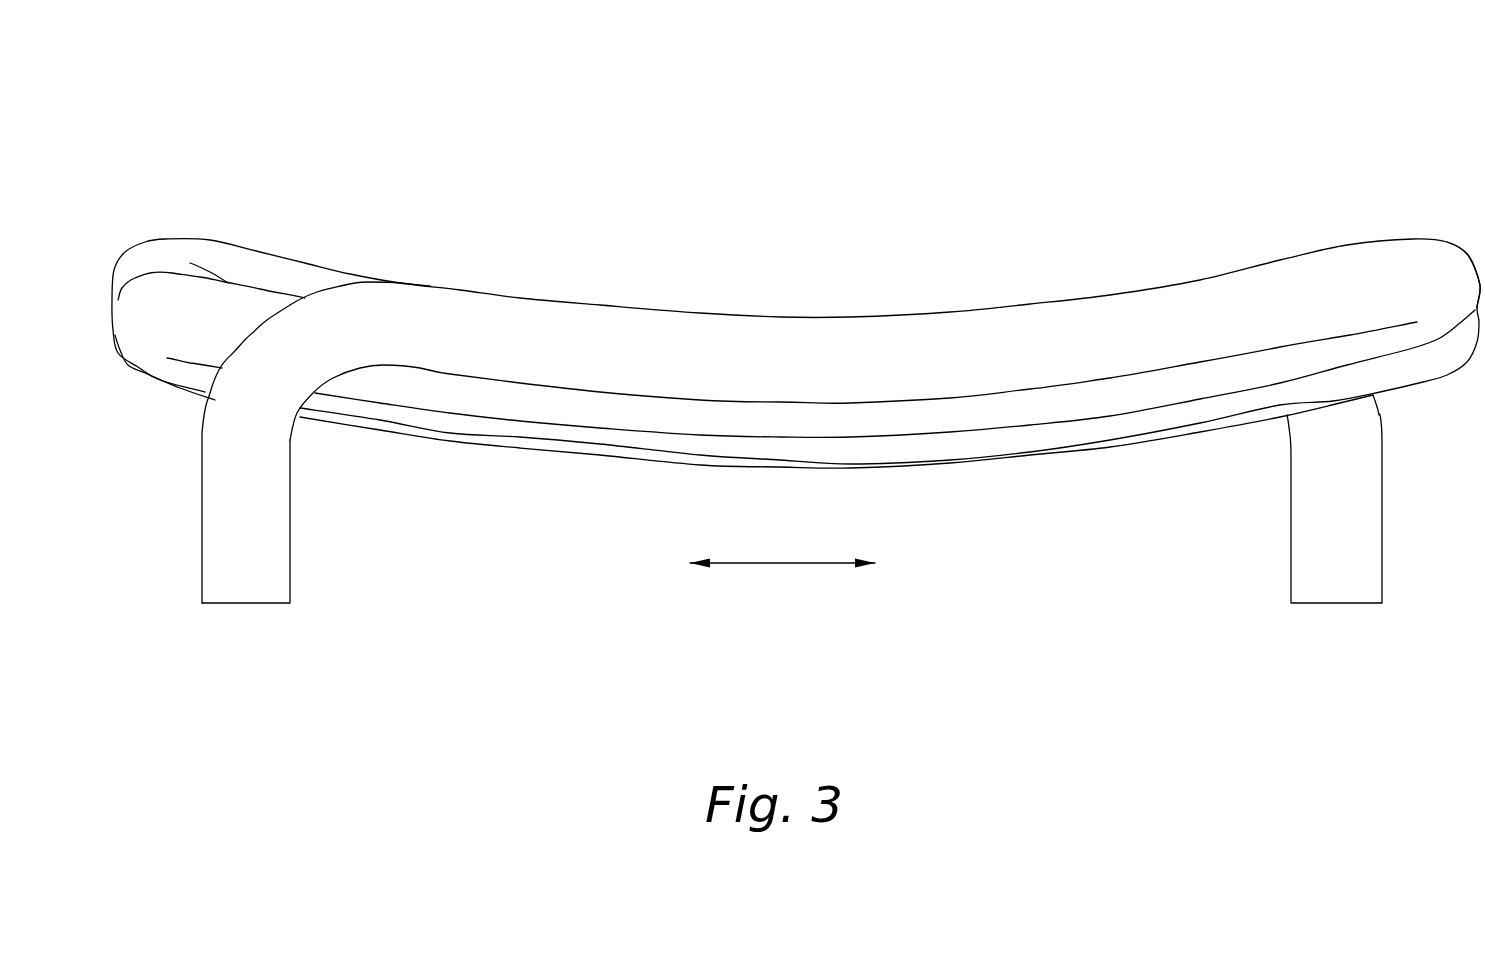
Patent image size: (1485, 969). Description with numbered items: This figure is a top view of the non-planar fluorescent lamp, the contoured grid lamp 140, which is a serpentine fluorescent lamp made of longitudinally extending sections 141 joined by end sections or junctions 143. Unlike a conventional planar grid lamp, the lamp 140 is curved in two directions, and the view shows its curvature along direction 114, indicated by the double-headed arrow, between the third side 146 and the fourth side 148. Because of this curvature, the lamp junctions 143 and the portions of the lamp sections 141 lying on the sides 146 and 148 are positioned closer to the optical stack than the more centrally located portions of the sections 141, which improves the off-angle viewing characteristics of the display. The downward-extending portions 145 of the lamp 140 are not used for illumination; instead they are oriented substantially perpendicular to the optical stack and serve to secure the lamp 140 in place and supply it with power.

The contoured grid lamp 140 is at (450, 112).
The longitudinally extending sections 141 is at (786, 337).
The end sections or junctions 143 is at (128, 370).
The portions 145 is at (275, 564).
The third side 146 is at (124, 224).
The fourth side 148 is at (1468, 230).
The direction 114 is at (775, 563).